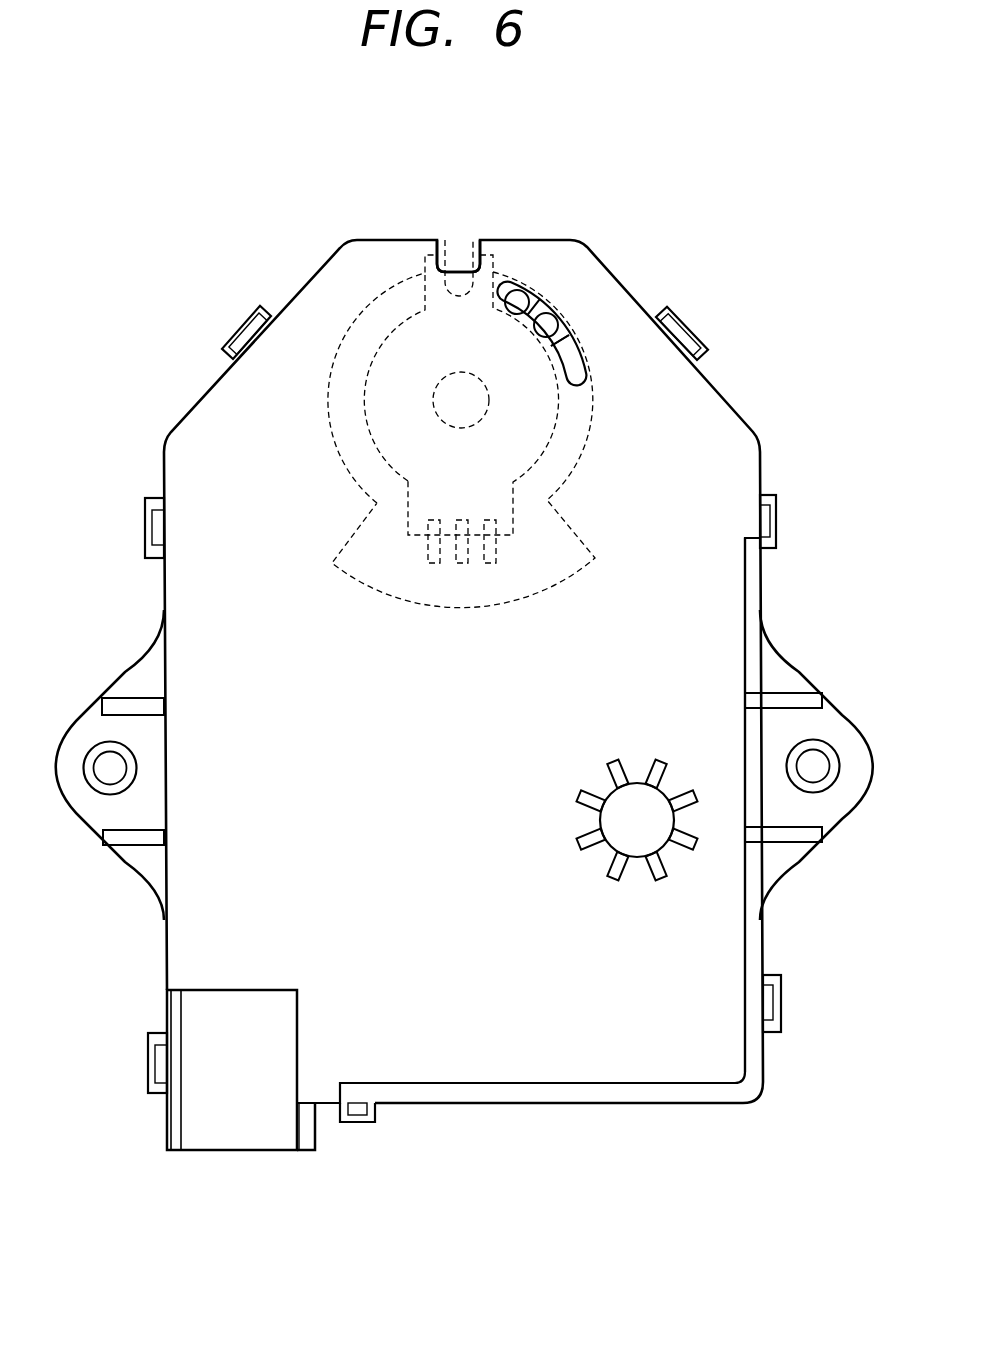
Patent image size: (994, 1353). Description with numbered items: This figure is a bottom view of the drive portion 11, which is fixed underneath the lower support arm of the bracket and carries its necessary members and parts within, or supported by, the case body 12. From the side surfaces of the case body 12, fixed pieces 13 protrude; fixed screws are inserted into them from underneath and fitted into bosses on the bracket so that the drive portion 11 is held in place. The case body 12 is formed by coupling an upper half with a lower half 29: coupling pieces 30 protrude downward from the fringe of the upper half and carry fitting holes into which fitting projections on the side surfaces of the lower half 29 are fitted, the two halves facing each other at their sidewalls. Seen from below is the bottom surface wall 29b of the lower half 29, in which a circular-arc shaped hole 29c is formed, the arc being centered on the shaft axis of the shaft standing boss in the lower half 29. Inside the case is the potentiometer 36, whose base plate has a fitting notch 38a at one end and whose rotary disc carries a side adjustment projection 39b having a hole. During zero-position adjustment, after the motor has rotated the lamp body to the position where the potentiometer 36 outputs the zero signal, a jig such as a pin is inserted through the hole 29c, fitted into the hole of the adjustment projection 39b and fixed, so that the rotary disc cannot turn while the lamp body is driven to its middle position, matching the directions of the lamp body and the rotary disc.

The drive portion 11 is at (642, 242).
The case body 12 is at (207, 382).
The fixed piece 13 is at (80, 714).
The lower half 29 is at (582, 1055).
The bottom surface wall 29b is at (723, 565).
The circular-arc shaped hole 29c is at (562, 365).
The coupling piece 30 is at (684, 315).
The potentiometer 36 is at (338, 453).
The fitting notch 38a is at (457, 288).
The adjustment projection 39b is at (523, 290).